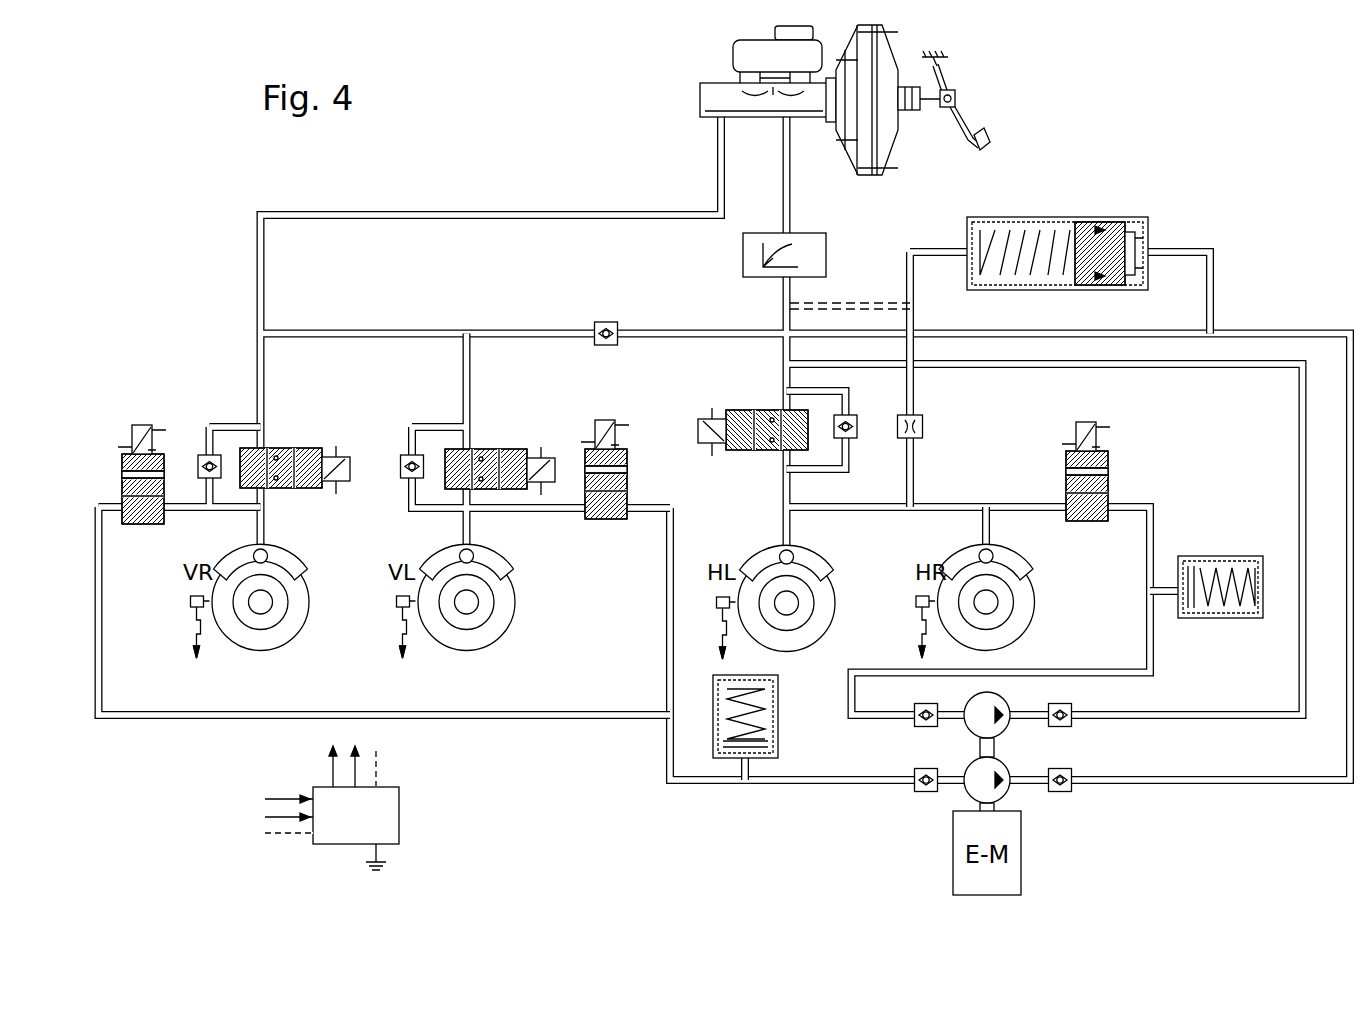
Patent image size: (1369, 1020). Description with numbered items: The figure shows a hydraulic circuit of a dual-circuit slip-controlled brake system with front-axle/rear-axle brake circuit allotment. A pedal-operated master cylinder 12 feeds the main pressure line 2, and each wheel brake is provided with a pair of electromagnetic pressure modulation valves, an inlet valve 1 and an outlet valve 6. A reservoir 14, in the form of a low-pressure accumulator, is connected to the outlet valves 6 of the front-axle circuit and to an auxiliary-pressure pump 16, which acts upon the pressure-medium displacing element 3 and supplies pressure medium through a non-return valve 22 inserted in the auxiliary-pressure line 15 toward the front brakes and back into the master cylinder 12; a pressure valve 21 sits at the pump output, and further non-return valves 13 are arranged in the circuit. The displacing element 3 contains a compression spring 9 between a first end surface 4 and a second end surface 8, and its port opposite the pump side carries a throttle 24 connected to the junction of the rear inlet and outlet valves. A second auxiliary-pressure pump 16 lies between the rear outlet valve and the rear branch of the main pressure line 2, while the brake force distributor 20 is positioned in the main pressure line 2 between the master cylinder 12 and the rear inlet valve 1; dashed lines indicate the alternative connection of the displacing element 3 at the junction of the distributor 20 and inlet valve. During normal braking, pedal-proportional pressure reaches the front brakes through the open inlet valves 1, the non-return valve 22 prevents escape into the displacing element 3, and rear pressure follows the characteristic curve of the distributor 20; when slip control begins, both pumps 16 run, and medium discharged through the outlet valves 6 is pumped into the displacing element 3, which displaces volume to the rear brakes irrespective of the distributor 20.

The pressure modulation valve (inlet valve) 1 is at (305, 448).
The main pressure line 2 is at (795, 173).
The pressure-medium displacing element 3 is at (1040, 218).
The first end surface 4 is at (1132, 222).
The pressure modulation valve (outlet valve) 6 is at (122, 457).
The second end surface 8 is at (1070, 222).
The compression spring 9 is at (993, 222).
The master cylinder 12 is at (708, 72).
The non-return valve 13 is at (206, 455).
The reservoir 14 is at (779, 708).
The auxiliary-pressure line 15 is at (1237, 720).
The auxiliary-pressure pump 16 is at (1003, 727).
The brake force distributor 20 is at (828, 250).
The pressure valve 21 is at (1068, 727).
The non-return valve 22 is at (607, 320).
The throttle/restrictor 24 is at (921, 427).